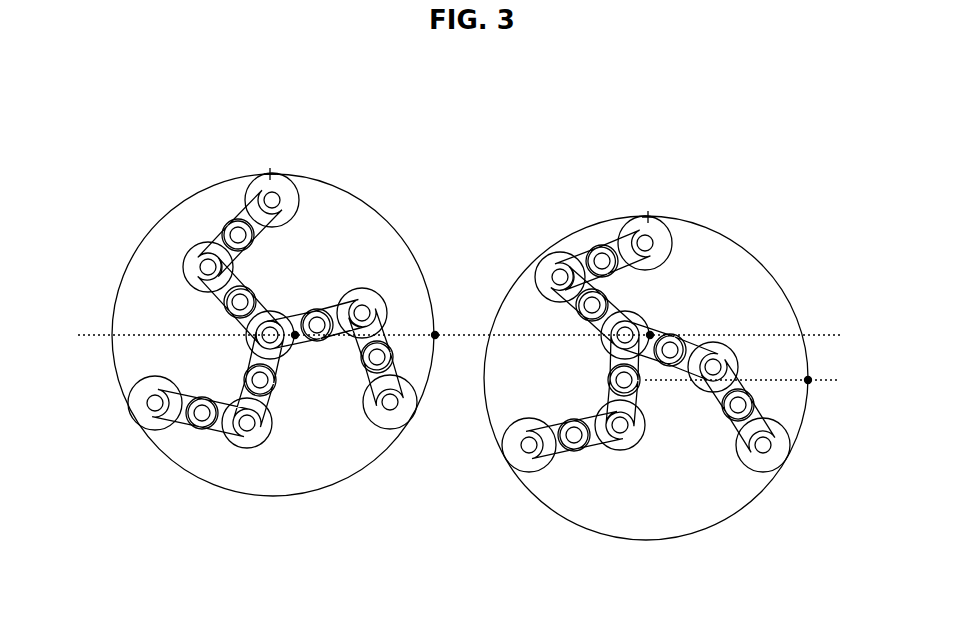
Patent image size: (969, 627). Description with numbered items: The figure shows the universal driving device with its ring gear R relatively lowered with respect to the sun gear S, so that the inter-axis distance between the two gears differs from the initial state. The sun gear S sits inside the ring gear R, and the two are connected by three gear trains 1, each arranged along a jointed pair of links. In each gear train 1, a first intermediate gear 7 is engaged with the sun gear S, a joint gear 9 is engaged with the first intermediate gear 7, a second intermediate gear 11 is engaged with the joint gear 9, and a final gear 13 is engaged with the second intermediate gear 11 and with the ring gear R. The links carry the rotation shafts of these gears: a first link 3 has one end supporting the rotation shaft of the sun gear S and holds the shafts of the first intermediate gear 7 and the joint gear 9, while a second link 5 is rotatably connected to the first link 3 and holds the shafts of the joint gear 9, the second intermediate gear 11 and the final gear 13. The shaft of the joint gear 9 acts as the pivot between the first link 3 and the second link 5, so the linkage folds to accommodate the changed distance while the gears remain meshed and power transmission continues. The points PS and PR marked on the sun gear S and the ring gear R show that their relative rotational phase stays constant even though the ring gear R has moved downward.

The gear train 1 is at (463, 331).
The first link 3 is at (222, 287).
The second link 5 is at (248, 208).
The first intermediate gear 7 is at (262, 277).
The joint gear 9 is at (188, 267).
The second intermediate gear 11 is at (220, 236).
The final gear 13 is at (270, 174).
The ring gear R is at (327, 178).
The sun gear S is at (295, 338).
The point marked on the sun gear PS is at (288, 352).
The point marked on the ring gear PR is at (436, 333).